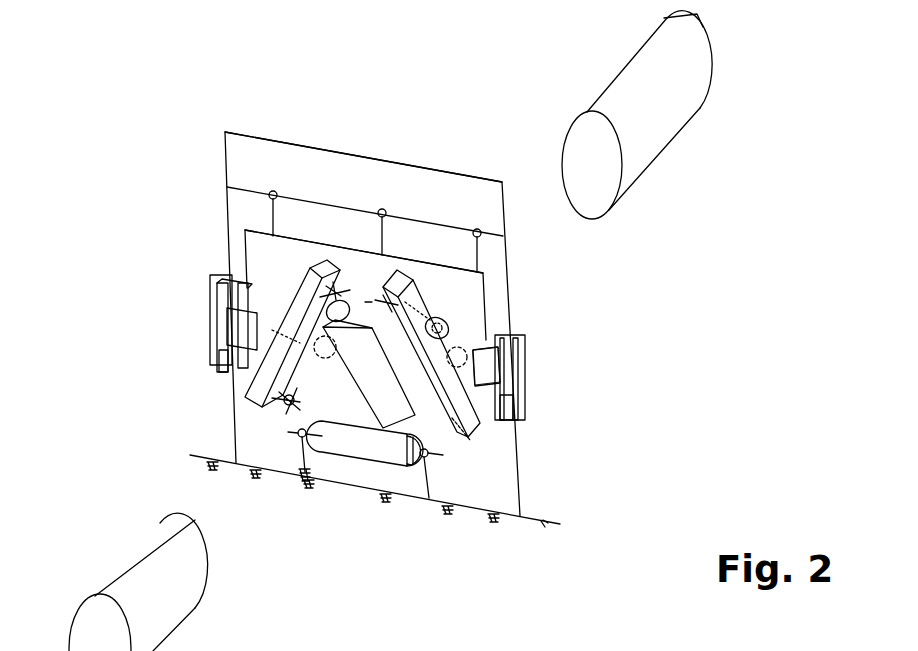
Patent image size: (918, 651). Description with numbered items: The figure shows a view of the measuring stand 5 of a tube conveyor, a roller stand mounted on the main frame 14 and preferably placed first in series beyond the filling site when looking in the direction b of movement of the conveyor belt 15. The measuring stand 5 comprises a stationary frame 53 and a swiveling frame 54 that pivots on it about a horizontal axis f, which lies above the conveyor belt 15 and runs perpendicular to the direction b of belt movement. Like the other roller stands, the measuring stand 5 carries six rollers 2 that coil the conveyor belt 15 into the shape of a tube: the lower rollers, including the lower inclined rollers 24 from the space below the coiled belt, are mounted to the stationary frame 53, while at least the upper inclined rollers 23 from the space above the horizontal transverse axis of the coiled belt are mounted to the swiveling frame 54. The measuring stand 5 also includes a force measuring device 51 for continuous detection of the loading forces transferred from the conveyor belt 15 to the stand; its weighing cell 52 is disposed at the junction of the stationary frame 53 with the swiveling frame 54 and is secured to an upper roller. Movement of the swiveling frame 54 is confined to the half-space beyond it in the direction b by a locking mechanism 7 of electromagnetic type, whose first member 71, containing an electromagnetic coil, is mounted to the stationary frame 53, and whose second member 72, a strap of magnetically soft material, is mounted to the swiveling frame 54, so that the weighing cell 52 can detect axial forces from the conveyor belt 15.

The rollers 2 is at (352, 400).
The measuring stand 5 is at (281, 135).
The locking mechanism 7 is at (223, 374).
The main frame 14 is at (545, 524).
The conveyor belt 15 is at (632, 78).
The upper inclined rollers 23 is at (292, 328).
The lower inclined rollers 24 is at (345, 383).
The force measuring device 51 is at (425, 297).
The weighing cell 52 is at (455, 312).
The stationary frame 53 is at (224, 213).
The swiveling frame 54 is at (263, 269).
The first member 71 is at (525, 357).
The second member 72 is at (475, 390).
The horizontal axis f is at (348, 212).
The direction of movement b is at (682, 65).